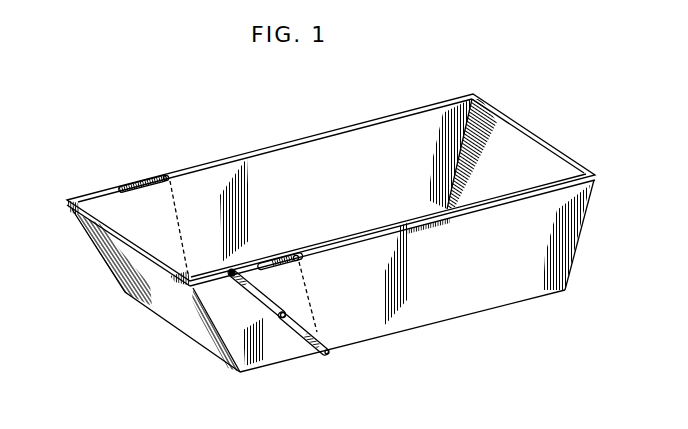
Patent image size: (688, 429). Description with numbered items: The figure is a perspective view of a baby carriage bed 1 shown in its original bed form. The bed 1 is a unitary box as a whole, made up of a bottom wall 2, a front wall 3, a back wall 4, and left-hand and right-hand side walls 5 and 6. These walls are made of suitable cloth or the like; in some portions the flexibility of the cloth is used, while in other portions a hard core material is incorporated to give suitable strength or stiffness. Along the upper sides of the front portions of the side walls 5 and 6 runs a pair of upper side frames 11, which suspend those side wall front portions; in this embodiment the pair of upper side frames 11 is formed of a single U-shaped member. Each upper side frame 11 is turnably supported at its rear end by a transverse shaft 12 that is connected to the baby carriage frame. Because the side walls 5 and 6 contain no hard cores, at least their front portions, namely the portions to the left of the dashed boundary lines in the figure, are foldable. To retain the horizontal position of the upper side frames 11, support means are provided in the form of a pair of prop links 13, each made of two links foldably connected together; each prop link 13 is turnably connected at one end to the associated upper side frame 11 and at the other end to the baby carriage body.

The baby carriage bed 1 is at (389, 99).
The bottom wall 2 is at (382, 226).
The front wall 3 is at (146, 295).
The back wall 4 is at (538, 151).
The left-hand side wall 5 is at (256, 152).
The right-hand side wall 6 is at (430, 306).
The upper side frame 11 is at (119, 184).
The transverse shaft 12 is at (167, 175).
The prop link 13 is at (272, 313).